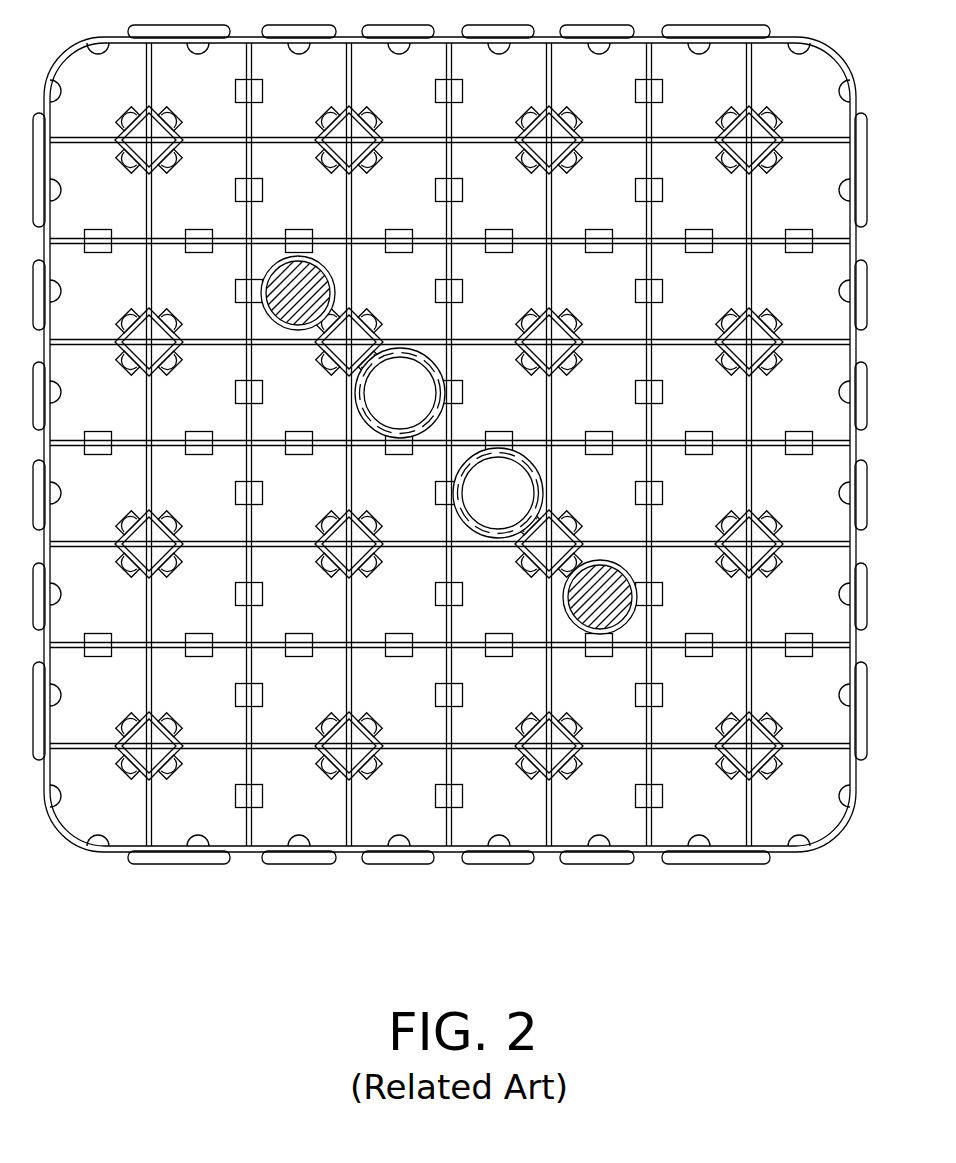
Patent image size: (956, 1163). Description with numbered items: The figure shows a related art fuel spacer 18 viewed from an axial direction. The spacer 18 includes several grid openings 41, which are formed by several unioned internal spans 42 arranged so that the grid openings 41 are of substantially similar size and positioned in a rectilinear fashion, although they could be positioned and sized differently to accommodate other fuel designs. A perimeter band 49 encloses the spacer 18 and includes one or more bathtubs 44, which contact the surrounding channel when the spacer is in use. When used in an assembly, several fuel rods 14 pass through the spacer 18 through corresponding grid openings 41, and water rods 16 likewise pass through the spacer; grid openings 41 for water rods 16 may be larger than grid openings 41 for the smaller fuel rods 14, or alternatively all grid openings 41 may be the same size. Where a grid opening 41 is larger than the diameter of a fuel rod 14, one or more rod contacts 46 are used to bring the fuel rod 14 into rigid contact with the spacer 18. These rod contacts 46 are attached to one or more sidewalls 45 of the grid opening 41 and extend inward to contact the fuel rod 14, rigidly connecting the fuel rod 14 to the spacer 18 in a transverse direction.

The fuel spacer 18 is at (823, 946).
The fuel rod 14 is at (337, 276).
The water rod 16 is at (450, 333).
The grid opening 41 is at (450, 412).
The internal span 42 is at (689, 137).
The bathtub 44 is at (300, 862).
The sidewall 45 is at (173, 648).
The rod contact 46 is at (449, 444).
The perimeter band 49 is at (70, 854).